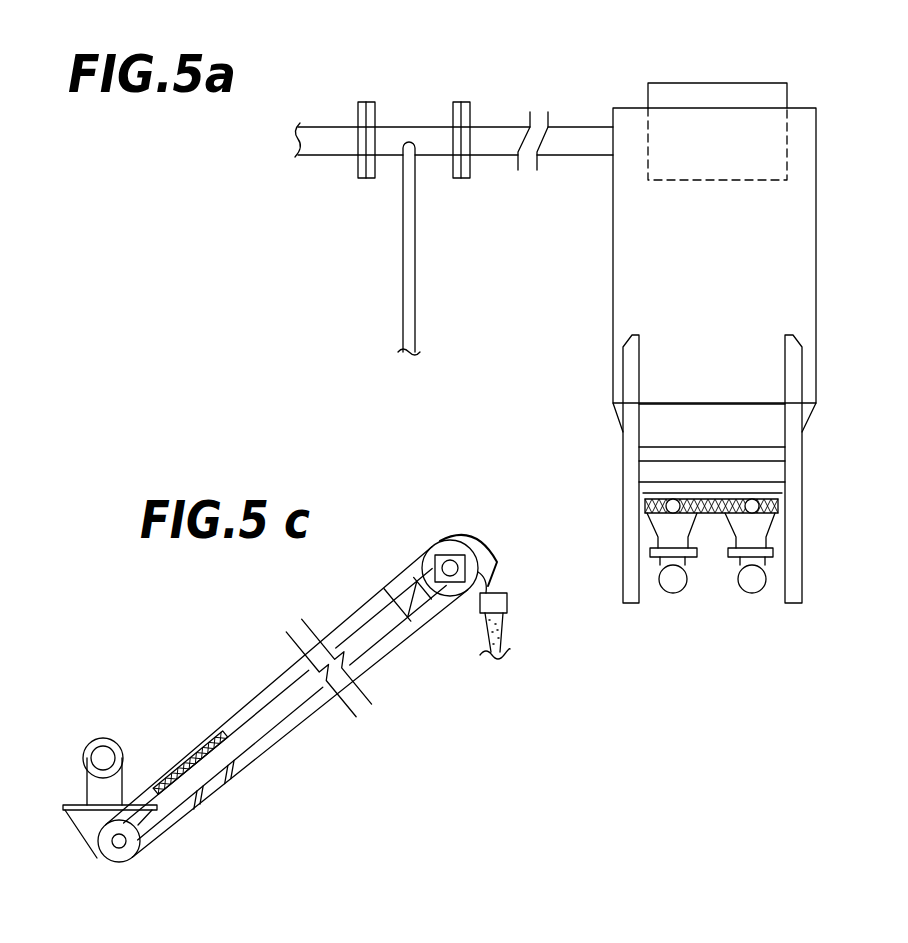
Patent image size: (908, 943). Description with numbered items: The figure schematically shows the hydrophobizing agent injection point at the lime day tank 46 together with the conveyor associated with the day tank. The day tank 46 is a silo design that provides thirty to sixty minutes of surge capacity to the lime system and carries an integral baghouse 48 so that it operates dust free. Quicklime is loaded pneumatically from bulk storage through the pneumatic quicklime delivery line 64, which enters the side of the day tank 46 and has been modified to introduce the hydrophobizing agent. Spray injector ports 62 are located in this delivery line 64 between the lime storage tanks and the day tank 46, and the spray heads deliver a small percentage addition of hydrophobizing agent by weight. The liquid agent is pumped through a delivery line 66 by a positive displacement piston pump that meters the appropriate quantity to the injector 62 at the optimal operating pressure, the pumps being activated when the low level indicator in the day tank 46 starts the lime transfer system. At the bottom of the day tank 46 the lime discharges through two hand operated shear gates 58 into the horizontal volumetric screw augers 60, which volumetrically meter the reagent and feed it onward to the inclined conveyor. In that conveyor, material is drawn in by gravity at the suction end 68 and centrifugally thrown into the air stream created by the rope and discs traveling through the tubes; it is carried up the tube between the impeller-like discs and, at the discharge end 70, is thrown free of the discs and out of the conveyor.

In FIG. 5A, the day tank 46 is at (626, 240).
In FIG. 5A, the integral baghouse 48 is at (781, 82).
In FIG. 5A, the hand operated shear gates 58 is at (767, 501).
In FIG. 5A, the horizontal screw augers 60 is at (677, 583).
In FIG. 5C, the horizontal screw augers 60 is at (98, 757).
In FIG. 5A, the spray injector ports 62 is at (388, 135).
In FIG. 5A, the pneumatic quicklime delivery line 64 is at (333, 144).
In FIG. 5A, the delivery line 66 is at (405, 302).
In FIG. 5C, the suction end 68 is at (123, 841).
In FIG. 5C, the discharge end 70 is at (491, 587).